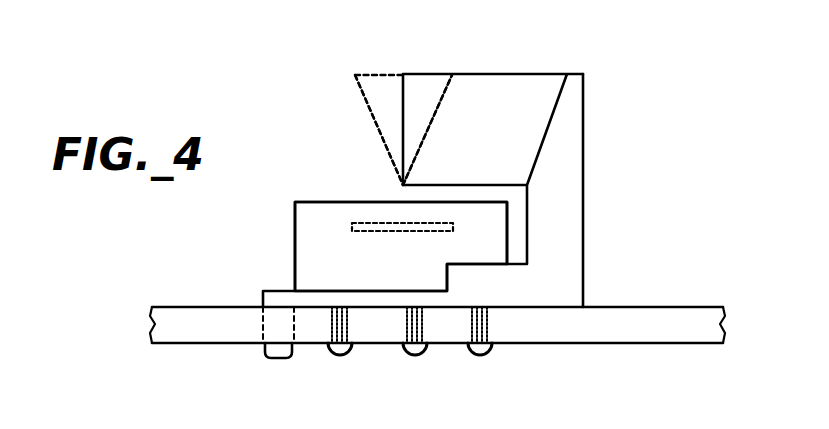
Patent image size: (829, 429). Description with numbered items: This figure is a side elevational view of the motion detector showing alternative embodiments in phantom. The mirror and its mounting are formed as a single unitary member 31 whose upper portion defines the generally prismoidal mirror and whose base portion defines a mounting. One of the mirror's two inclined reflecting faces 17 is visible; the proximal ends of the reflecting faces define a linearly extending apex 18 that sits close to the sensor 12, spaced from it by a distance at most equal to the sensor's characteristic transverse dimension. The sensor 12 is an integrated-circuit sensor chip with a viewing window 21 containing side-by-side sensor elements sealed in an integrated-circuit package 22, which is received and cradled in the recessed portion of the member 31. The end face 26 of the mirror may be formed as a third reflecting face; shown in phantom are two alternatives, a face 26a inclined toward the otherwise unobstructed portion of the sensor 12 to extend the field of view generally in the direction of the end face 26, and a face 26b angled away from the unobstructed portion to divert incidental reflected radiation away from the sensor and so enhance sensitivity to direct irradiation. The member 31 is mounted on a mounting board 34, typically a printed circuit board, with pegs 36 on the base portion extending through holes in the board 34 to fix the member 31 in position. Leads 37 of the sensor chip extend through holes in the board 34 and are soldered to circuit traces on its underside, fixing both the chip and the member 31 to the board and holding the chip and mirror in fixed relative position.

The sensor 12 is at (393, 233).
The reflecting face 17 is at (513, 108).
The apex 18 is at (422, 186).
The viewing window 21 is at (320, 202).
The integrated-circuit package 22 is at (296, 229).
The end face 26 is at (404, 92).
The face 26a is at (363, 99).
The face 26b is at (446, 98).
The unitary member 31 is at (585, 235).
The mounting board 34 is at (221, 306).
The pegs 36 is at (280, 360).
The leads 37 is at (347, 322).